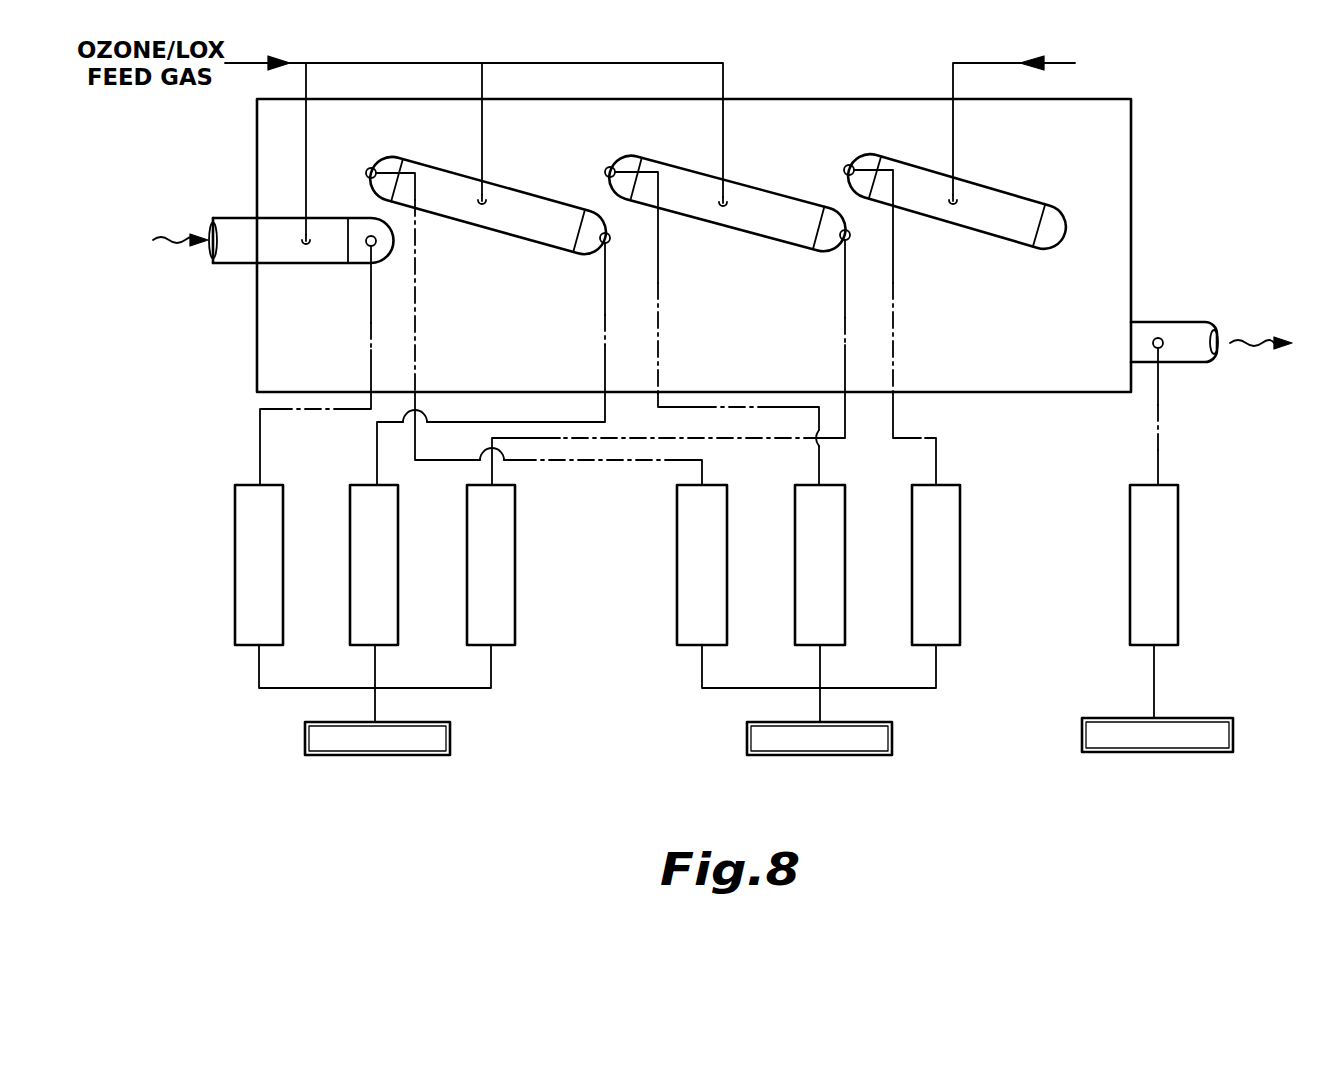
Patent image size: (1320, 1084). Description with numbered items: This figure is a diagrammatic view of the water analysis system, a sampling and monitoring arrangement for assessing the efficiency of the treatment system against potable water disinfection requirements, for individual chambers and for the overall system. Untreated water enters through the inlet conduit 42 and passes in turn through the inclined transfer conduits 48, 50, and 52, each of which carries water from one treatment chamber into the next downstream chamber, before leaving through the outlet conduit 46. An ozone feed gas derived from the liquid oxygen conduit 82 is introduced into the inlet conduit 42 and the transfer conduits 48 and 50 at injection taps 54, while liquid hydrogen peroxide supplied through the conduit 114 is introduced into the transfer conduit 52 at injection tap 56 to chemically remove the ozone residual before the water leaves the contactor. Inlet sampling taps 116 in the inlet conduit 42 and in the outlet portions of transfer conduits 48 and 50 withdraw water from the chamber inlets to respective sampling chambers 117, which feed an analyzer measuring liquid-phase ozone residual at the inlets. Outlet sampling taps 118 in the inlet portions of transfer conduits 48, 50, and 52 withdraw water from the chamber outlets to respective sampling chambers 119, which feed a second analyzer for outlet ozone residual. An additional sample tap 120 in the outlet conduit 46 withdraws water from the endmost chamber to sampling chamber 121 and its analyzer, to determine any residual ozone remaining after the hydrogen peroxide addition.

The liquid oxygen conduit 82 is at (253, 64).
The conduit 114 is at (953, 62).
The inlet conduit 42 is at (243, 225).
The transfer conduit 48 is at (437, 176).
The transfer conduit 50 is at (670, 174).
The transfer conduit 52 is at (915, 178).
The injection tap 54 is at (305, 250).
The injection tap 56 is at (950, 212).
The outlet sampling tap 118 is at (368, 168).
The inlet sampling tap 116 is at (367, 248).
The outlet conduit 46 is at (1187, 354).
The sample tap 120 is at (1153, 330).
The sampling chamber 117 is at (350, 508).
The sampling chamber 119 is at (795, 508).
The sampling chamber 121 is at (1178, 538).